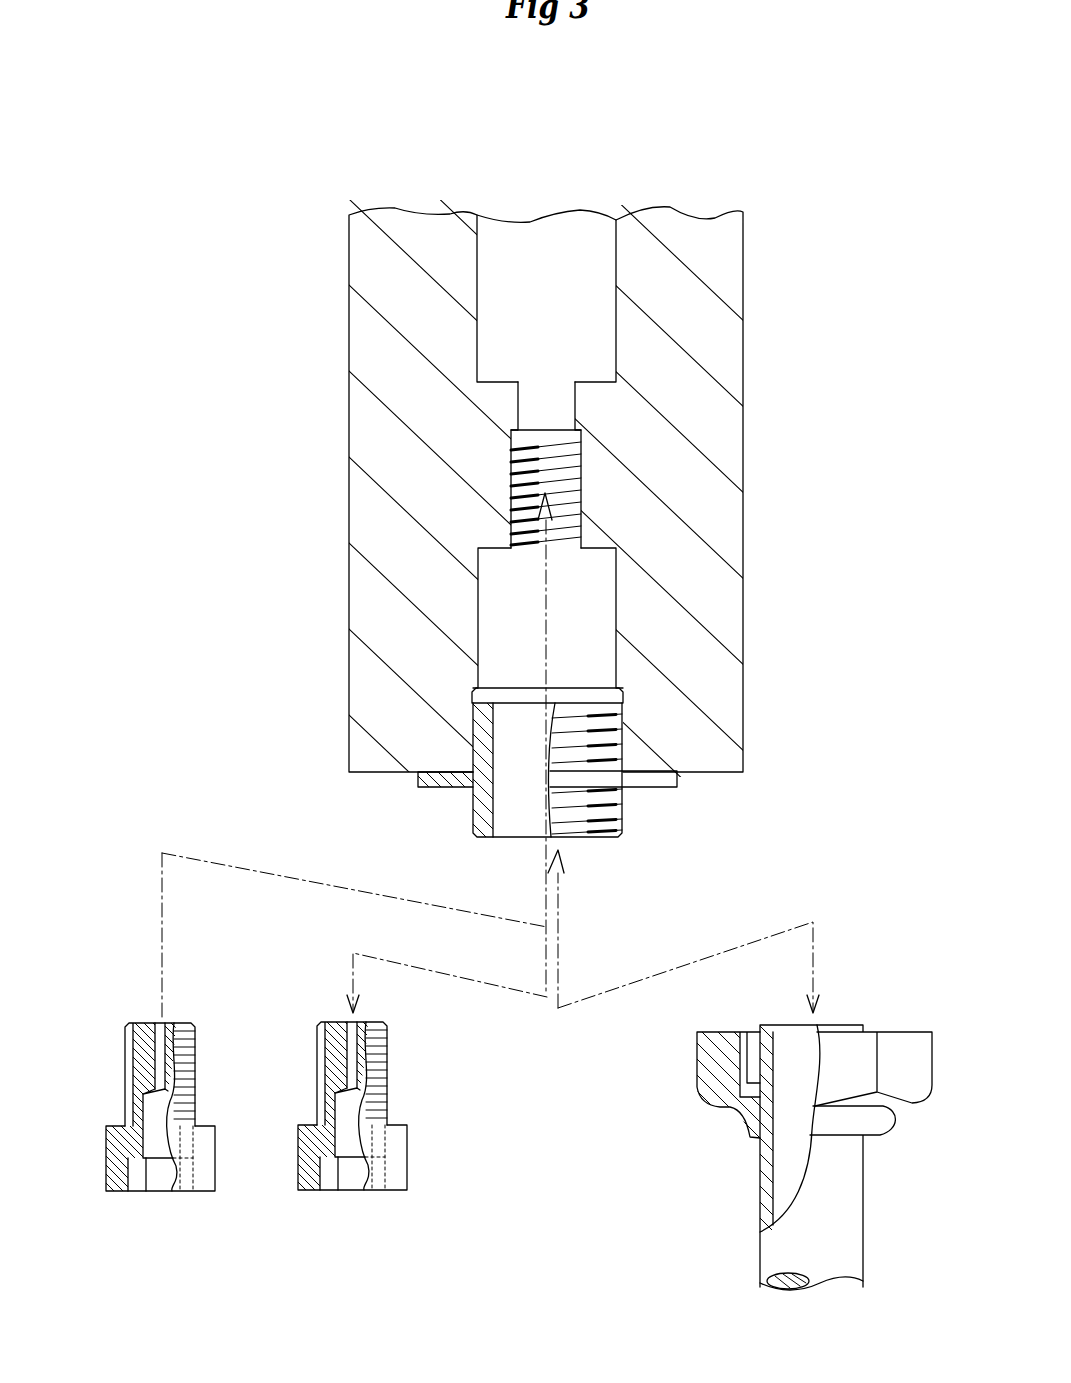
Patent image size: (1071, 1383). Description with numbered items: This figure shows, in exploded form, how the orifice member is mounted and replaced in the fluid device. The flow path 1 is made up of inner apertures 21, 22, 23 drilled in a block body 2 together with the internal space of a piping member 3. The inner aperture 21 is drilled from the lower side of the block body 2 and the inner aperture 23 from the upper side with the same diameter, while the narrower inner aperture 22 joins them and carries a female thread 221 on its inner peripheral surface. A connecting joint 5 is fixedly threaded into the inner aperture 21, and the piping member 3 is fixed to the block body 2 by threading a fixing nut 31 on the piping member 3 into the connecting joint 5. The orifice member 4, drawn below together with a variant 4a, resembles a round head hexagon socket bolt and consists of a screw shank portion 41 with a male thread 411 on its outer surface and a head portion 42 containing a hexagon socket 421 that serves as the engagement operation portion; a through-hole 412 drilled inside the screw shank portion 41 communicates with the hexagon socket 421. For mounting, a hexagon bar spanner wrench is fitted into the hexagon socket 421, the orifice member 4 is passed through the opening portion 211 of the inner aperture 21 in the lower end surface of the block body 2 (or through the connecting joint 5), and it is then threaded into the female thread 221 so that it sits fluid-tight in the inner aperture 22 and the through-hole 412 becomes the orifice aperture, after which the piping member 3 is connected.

The flow path 1 is at (552, 272).
The block body 2 is at (349, 408).
The inner aperture 21 is at (480, 648).
The opening portion 211 is at (625, 768).
The inner aperture 22 is at (518, 416).
The female thread 221 is at (580, 468).
The inner aperture 23 is at (480, 258).
The piping member 3 is at (760, 1190).
The fixing nut 31 is at (753, 1136).
The orifice member 4 is at (388, 1121).
The insert (variant) 4a is at (97, 990).
The screw shank portion 41 is at (388, 1057).
The male thread 411 is at (441, 1074).
The through-hole 412 is at (338, 1022).
The head portion 42 is at (398, 1207).
The hexagon socket 421 is at (327, 1170).
The connecting joint 5 is at (622, 808).